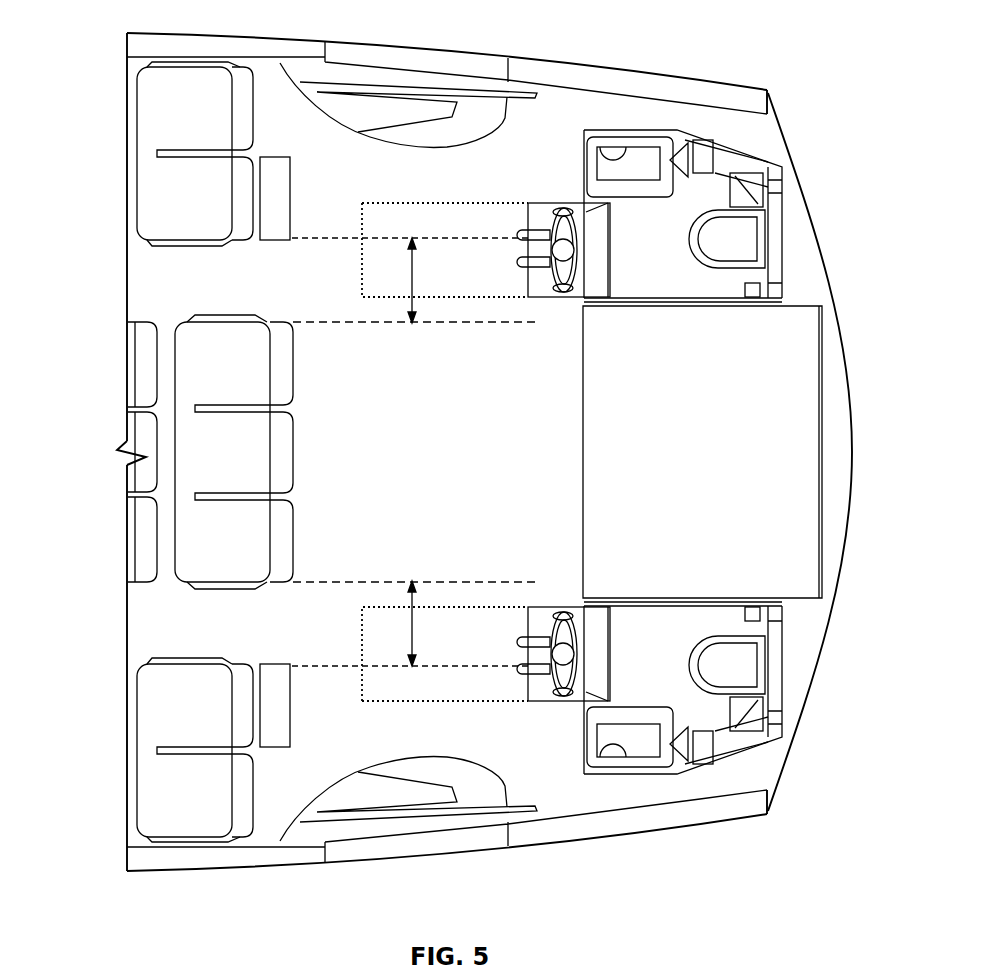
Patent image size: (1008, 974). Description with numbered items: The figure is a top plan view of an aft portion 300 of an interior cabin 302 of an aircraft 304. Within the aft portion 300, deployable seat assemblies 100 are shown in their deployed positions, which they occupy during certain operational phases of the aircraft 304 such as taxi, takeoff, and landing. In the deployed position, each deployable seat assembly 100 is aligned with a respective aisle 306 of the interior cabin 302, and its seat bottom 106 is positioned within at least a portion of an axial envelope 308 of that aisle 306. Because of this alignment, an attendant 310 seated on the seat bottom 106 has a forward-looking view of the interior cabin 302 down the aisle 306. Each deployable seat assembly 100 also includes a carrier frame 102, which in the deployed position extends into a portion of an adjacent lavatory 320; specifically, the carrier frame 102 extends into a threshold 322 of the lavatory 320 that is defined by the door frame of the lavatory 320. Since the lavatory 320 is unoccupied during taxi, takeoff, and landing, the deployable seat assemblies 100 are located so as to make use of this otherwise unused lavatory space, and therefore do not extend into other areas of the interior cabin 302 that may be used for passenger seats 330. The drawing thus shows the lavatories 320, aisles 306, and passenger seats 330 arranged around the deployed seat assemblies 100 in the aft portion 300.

The deployable seat assembly 100 is at (460, 307).
The carrier frame 102 is at (612, 254).
The seat bottom 106 is at (547, 215).
The aft portion 300 is at (148, 260).
The interior cabin 302 is at (563, 118).
The aircraft 304 is at (688, 77).
The aisle 306 is at (177, 290).
The axial envelope 308 is at (412, 280).
The attendant 310 is at (572, 253).
The lavatory 320 is at (680, 265).
The threshold 322 is at (587, 212).
The passenger seat 330 is at (167, 102).